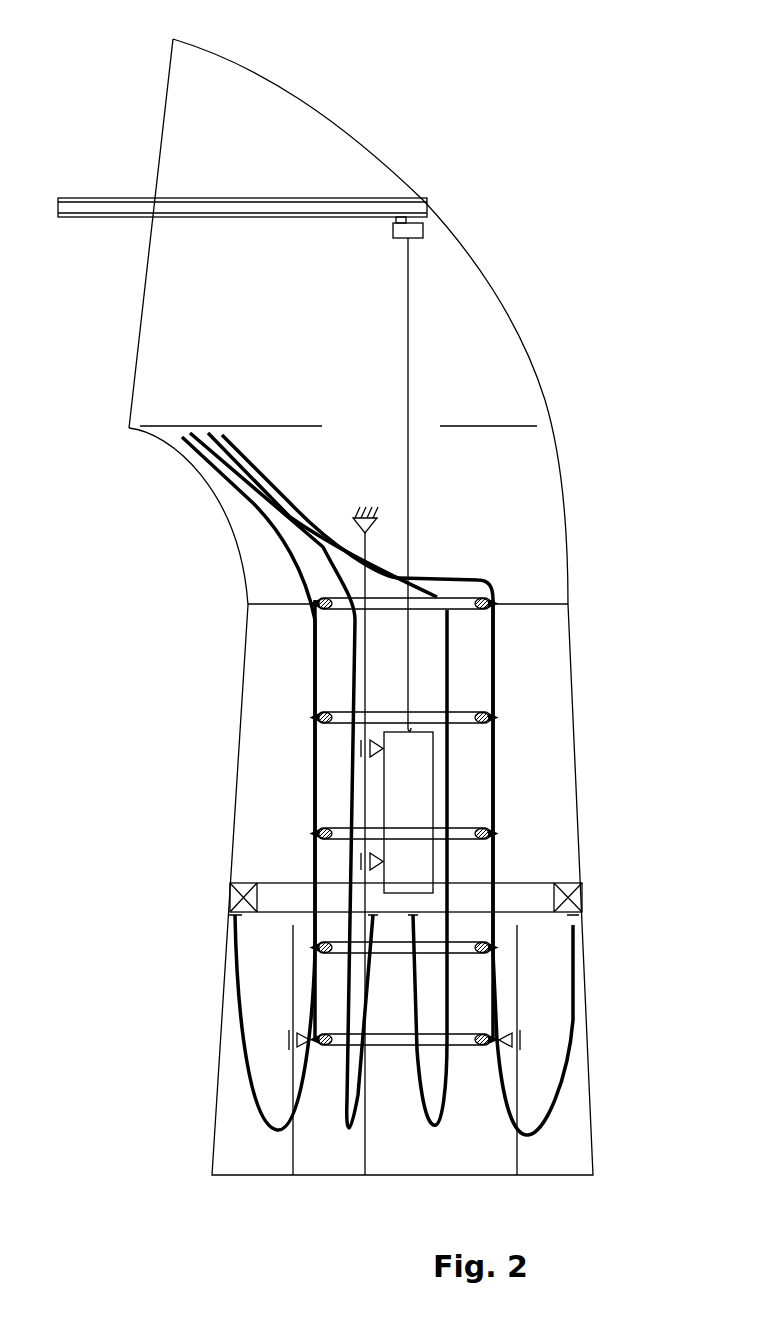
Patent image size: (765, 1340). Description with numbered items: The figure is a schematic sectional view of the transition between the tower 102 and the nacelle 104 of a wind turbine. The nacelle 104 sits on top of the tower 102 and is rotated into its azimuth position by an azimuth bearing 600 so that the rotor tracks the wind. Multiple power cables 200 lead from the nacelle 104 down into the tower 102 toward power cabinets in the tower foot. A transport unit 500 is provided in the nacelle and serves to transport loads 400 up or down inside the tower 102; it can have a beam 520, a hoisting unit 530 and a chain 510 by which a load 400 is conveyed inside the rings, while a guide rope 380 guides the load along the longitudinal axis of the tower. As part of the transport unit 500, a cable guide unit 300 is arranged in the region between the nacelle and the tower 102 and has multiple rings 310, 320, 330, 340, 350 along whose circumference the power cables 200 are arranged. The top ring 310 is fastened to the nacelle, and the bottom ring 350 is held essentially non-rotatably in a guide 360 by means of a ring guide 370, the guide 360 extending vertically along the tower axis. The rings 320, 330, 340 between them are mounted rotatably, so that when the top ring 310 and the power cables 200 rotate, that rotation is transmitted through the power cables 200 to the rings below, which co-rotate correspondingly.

The transport unit 500 is at (90, 75).
The nacelle 104 is at (508, 338).
The tower 102 is at (592, 1085).
The beam 520 is at (329, 197).
The hoisting unit 530 is at (417, 238).
The chain 510 is at (409, 396).
The guide rope 380 is at (368, 550).
The power cables 200 is at (253, 507).
The cable guide unit 300 is at (466, 598).
The top ring 310 is at (467, 612).
The ring 320 is at (463, 719).
The ring 330 is at (463, 832).
The ring 340 is at (337, 940).
The ring guide 370 is at (288, 1035).
The load 400 is at (397, 812).
The azimuth bearing 600 is at (566, 887).
The bottom ring 350 is at (402, 1042).
The guide 360 is at (292, 1140).